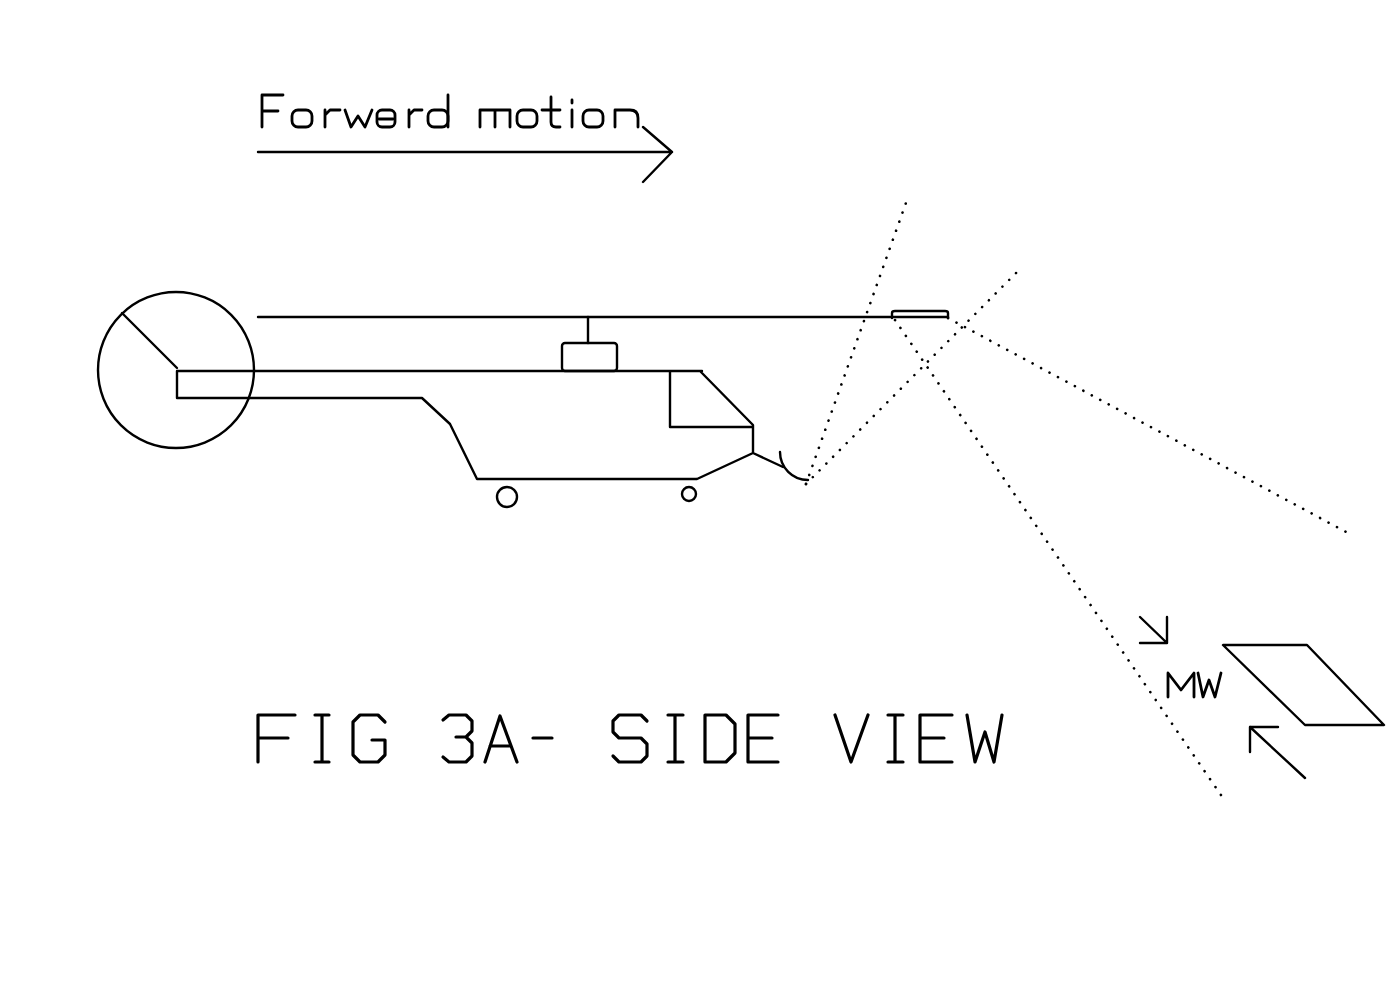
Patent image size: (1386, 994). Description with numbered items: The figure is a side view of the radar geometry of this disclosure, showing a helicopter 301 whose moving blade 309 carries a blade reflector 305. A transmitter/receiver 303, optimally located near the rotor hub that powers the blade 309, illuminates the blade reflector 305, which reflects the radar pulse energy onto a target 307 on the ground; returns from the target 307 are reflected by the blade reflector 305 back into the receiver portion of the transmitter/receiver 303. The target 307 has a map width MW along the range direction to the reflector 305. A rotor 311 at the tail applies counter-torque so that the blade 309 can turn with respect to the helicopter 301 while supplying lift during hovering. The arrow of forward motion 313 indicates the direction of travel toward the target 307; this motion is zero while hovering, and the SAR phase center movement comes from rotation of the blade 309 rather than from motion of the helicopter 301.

The helicopter 301 is at (368, 423).
The transmitter/receiver 303 is at (802, 488).
The blade reflector 305 is at (932, 294).
The target 307 is at (1262, 659).
The moving blade 309 is at (603, 285).
The rotor 311 is at (148, 285).
The forward motion 313 is at (465, 157).